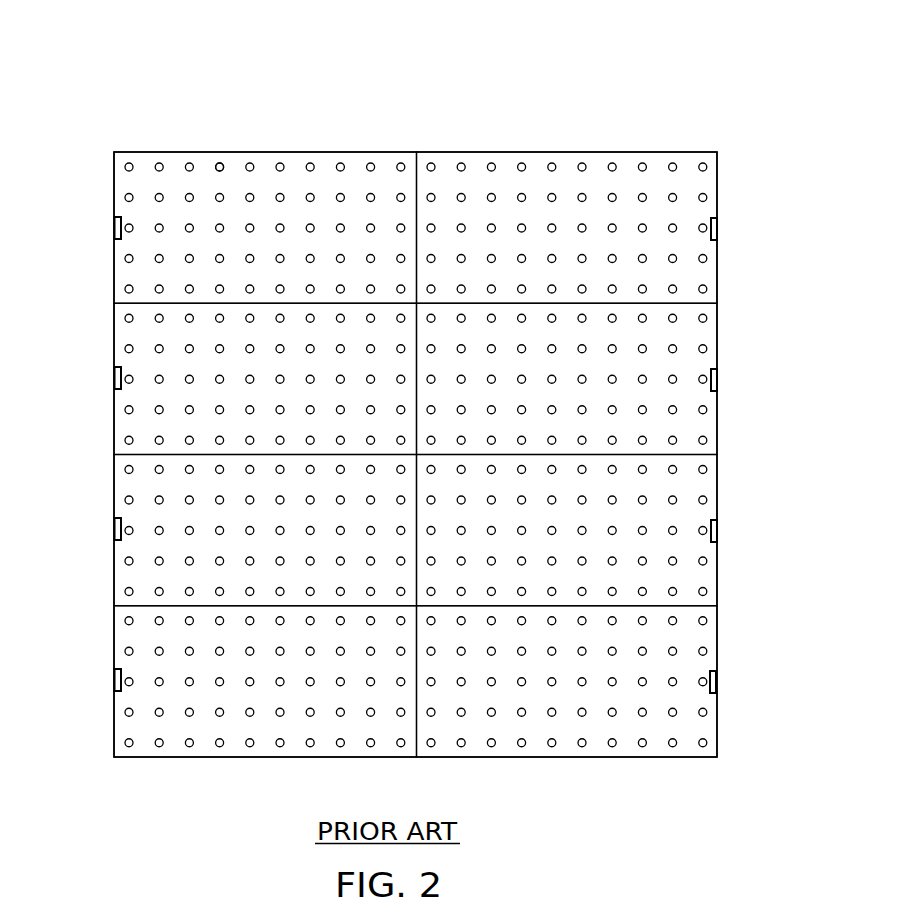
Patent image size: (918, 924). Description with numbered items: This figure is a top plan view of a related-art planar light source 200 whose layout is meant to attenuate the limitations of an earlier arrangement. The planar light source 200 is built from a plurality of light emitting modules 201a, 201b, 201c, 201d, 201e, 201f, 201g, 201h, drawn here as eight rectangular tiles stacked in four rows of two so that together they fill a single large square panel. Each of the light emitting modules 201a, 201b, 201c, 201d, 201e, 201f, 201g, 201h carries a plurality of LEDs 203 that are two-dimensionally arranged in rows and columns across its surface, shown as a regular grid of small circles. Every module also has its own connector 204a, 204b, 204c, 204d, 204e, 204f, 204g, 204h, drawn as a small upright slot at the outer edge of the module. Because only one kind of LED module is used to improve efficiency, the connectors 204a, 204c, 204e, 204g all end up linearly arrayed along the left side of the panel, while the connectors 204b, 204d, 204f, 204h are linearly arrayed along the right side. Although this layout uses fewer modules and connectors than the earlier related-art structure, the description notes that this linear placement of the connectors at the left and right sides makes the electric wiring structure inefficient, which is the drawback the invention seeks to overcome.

The planar light source 200 is at (507, 96).
The light emitting module 201a is at (127, 157).
The light emitting module 201b is at (707, 188).
The light emitting module 201c is at (122, 333).
The light emitting module 201d is at (707, 337).
The light emitting module 201e is at (122, 483).
The light emitting module 201f is at (705, 490).
The light emitting module 201g is at (122, 633).
The light emitting module 201h is at (705, 642).
The LED 203 is at (220, 164).
The connector 204a is at (117, 226).
The connector 204b is at (718, 232).
The connector 204c is at (117, 378).
The connector 204d is at (718, 387).
The connector 204e is at (117, 527).
The connector 204f is at (718, 536).
The connector 204g is at (117, 679).
The connector 204h is at (716, 687).